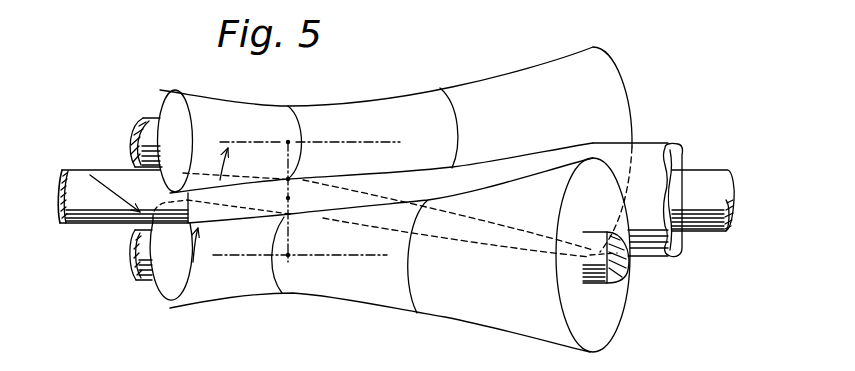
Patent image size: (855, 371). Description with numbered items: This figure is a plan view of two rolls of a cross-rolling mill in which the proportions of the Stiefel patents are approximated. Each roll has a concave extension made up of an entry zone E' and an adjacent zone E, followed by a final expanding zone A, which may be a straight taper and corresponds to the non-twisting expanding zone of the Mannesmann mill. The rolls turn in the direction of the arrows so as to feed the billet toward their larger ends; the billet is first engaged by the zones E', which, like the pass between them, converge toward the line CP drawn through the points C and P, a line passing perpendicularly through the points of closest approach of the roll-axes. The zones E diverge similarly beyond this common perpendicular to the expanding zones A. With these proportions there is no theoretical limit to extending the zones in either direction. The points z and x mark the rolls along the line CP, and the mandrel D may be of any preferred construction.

The expanding zone A is at (620, 80).
The point on line CP C is at (310, 192).
The mandrel D is at (704, 178).
The concave extension zone E is at (363, 205).
The entry zone of concave extension E' is at (222, 199).
The point on line CP P is at (300, 267).
The contact point on lower roll x is at (277, 203).
The contact point on upper roll z is at (275, 173).